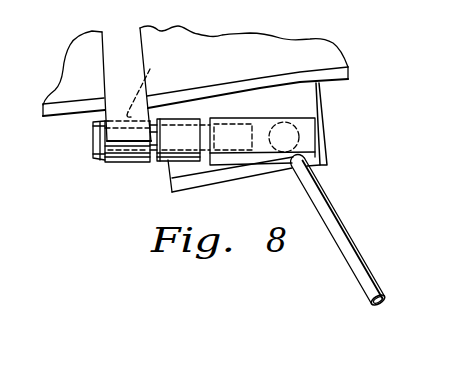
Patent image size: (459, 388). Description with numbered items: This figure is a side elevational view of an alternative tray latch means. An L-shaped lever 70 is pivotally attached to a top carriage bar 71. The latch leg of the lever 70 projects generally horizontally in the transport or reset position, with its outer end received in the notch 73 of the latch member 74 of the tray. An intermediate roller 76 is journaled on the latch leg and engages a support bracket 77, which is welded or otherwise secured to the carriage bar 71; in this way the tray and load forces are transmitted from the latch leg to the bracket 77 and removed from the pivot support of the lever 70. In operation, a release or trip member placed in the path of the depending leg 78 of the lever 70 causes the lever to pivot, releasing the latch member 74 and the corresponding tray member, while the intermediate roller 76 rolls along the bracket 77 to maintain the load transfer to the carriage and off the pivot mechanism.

The L-shaped lever 70 is at (322, 178).
The top carriage bar 71 is at (320, 55).
The notch 73 is at (151, 68).
The latch member 74 is at (107, 45).
The intermediate roller 76 is at (171, 151).
The support bracket 77 is at (307, 104).
The depending leg 78 is at (352, 240).